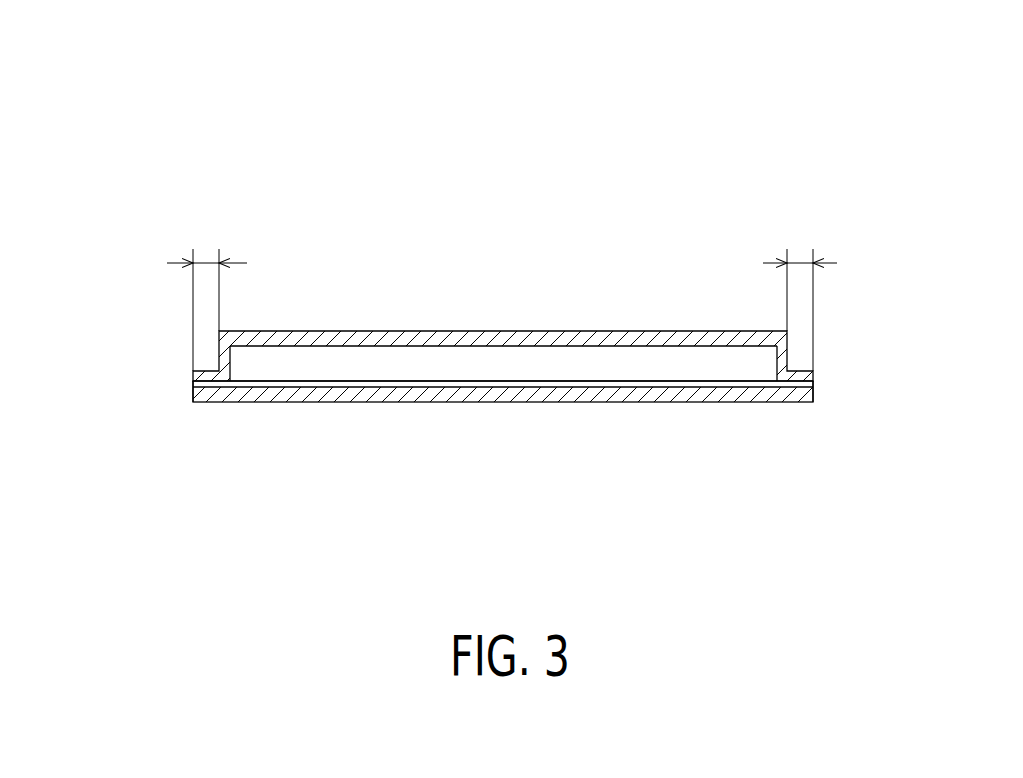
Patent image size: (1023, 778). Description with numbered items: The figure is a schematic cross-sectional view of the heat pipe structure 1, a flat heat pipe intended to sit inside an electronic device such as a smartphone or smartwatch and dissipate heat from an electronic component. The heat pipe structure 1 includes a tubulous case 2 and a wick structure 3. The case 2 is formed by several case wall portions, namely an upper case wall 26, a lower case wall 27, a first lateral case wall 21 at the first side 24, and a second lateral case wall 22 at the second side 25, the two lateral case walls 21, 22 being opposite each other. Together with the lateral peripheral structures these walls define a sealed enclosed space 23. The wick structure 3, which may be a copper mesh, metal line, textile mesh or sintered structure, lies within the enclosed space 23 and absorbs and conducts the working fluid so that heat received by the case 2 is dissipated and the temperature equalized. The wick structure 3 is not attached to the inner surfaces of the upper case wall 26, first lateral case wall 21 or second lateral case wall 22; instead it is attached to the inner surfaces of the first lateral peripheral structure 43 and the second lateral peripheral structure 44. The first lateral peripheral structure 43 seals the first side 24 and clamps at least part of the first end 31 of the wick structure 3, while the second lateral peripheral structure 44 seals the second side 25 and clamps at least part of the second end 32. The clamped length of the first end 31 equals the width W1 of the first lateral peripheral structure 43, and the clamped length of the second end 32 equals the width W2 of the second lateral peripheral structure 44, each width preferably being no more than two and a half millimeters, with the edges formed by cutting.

The heat pipe structure 1 is at (1008, 80).
The case 2 is at (487, 322).
The wick structure 3 is at (532, 385).
The first lateral case wall 21 is at (790, 353).
The second lateral case wall 22 is at (218, 357).
The enclosed space 23 is at (636, 372).
The first side 24 is at (815, 373).
The second side 25 is at (191, 373).
The upper case wall 26 is at (315, 332).
The lower case wall 27 is at (335, 403).
The first end 31 is at (813, 387).
The second end 32 is at (193, 388).
The first lateral peripheral structure 43 is at (790, 400).
The second lateral peripheral structure 44 is at (210, 402).
The width of the first lateral peripheral structure W1 is at (800, 294).
The width of the second lateral peripheral structure W2 is at (207, 294).